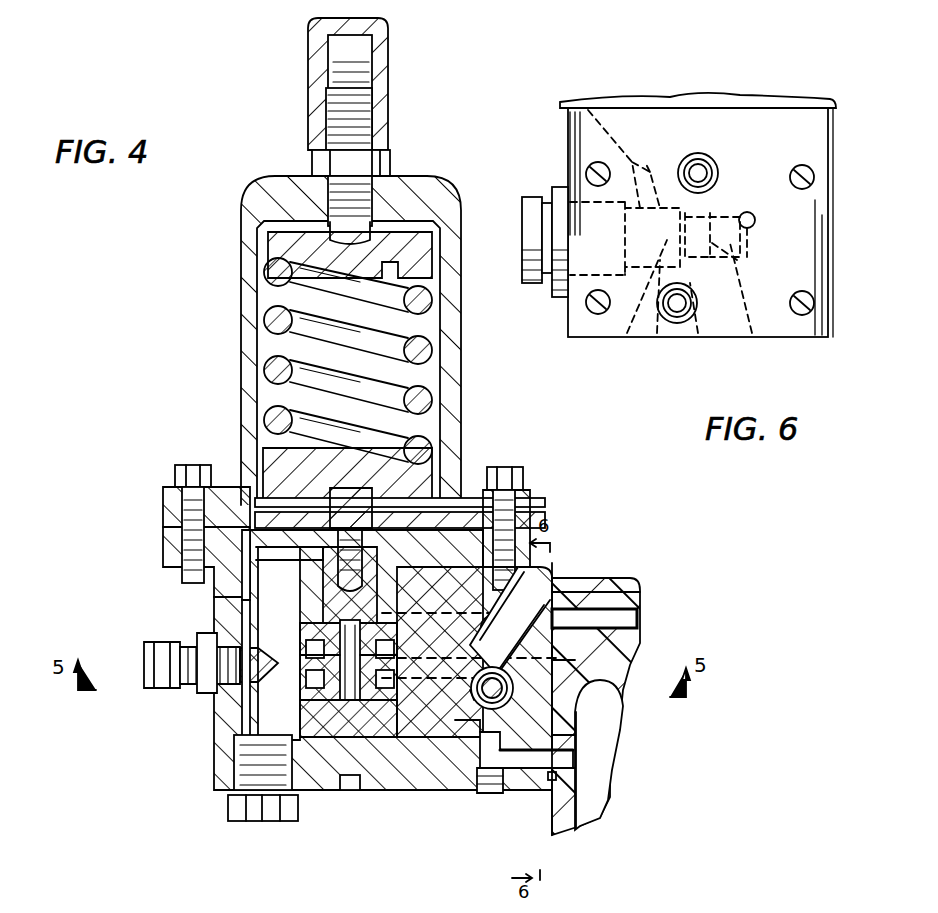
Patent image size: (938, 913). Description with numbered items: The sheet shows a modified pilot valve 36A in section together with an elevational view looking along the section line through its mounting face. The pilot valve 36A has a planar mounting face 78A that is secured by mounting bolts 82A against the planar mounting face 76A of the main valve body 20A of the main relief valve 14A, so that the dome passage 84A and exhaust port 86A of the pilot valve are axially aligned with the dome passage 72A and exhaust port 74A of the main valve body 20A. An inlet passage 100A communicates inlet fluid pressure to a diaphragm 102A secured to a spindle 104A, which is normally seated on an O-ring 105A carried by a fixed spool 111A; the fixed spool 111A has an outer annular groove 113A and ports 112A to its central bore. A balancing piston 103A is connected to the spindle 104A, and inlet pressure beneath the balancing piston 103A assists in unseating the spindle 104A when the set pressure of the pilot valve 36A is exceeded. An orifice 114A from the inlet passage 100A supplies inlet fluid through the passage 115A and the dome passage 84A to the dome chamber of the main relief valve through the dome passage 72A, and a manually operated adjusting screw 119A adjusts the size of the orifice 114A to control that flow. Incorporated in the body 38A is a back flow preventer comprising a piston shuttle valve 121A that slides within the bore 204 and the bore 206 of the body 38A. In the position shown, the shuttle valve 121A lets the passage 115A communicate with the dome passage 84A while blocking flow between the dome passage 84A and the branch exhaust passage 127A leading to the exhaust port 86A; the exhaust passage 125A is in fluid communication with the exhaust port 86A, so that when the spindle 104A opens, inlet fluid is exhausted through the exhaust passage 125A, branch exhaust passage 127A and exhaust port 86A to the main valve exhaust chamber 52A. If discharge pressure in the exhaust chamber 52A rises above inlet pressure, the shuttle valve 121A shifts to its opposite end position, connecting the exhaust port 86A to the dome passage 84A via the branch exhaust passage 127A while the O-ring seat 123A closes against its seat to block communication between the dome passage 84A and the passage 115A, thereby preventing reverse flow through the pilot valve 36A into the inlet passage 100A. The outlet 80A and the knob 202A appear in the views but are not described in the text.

In FIG. 4, the main relief valve 14A is at (628, 850).
In FIG. 4, the main valve body 20A is at (562, 818).
In FIG. 4, the pilot valve 36A is at (240, 340).
In FIG. 4, the body 38A is at (430, 790).
In FIG. 6, the body 38A is at (645, 120).
In FIG. 4, the main valve exhaust chamber 52A is at (595, 798).
In FIG. 4, the dome passage 72A is at (632, 618).
In FIG. 4, the exhaust port 74A is at (575, 768).
In FIG. 4, the planar mounting face 76A is at (580, 735).
In FIG. 4, the planar mounting face 78A is at (553, 688).
In FIG. 4, the outlet 80A is at (443, 904).
In FIG. 6, the mounting bolts 82A is at (590, 172).
In FIG. 4, the dome passage 84A is at (622, 568).
In FIG. 6, the dome passage 84A is at (698, 160).
In FIG. 4, the exhaust port 86A is at (528, 765).
In FIG. 6, the exhaust port 86A is at (698, 333).
In FIG. 4, the inlet passage 100A is at (222, 700).
In FIG. 4, the diaphragm 102A is at (248, 505).
In FIG. 4, the balancing piston 103A is at (325, 770).
In FIG. 4, the spindle 104A is at (165, 578).
In FIG. 4, the O-ring 105A is at (500, 512).
In FIG. 4, the fixed spool 111A is at (372, 795).
In FIG. 4, the ports 112A is at (282, 638).
In FIG. 4, the outer annular groove 113A is at (471, 645).
In FIG. 4, the orifice 114A is at (240, 726).
In FIG. 4, the passage 115A is at (472, 712).
In FIG. 6, the passage 115A is at (746, 212).
In FIG. 4, the adjusting screw 119A is at (147, 667).
In FIG. 4, the piston shuttle valve 121A is at (610, 693).
In FIG. 6, the piston shuttle valve 121A is at (752, 333).
In FIG. 4, the O-ring seat 123A is at (462, 750).
In FIG. 6, the O-ring seat 123A is at (627, 333).
In FIG. 4, the exhaust passage 125A is at (532, 483).
In FIG. 6, the exhaust passage 125A is at (590, 110).
In FIG. 4, the branch exhaust passage 127A is at (573, 552).
In FIG. 6, the branch exhaust passage 127A is at (657, 333).
In FIG. 6, the knob 202A is at (516, 228).
In FIG. 6, the bore 204 is at (748, 244).
In FIG. 6, the bore 206 is at (696, 303).